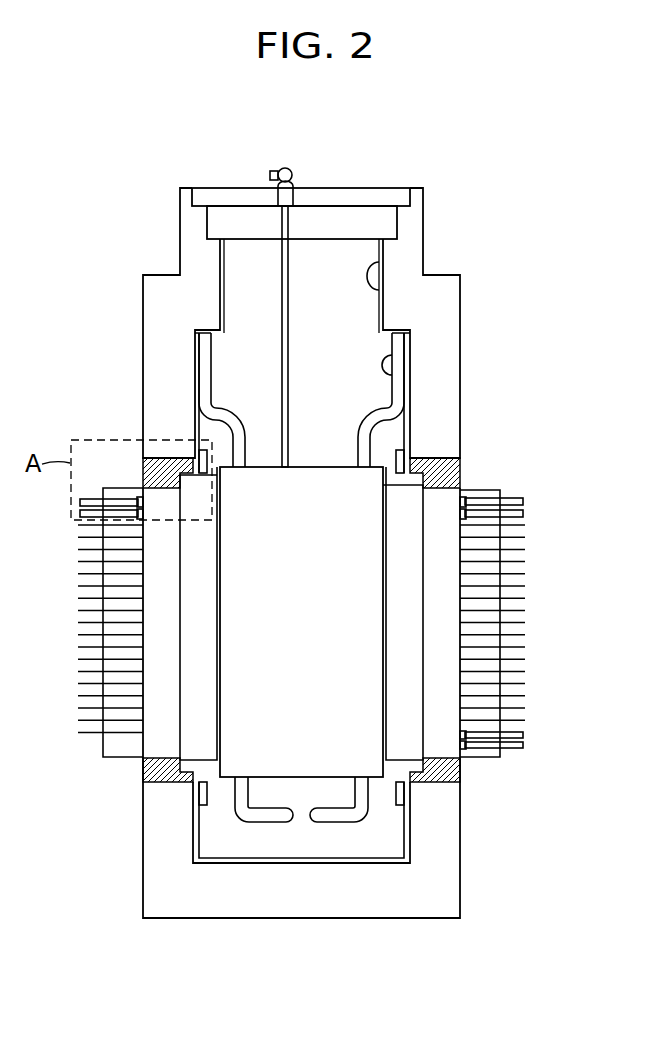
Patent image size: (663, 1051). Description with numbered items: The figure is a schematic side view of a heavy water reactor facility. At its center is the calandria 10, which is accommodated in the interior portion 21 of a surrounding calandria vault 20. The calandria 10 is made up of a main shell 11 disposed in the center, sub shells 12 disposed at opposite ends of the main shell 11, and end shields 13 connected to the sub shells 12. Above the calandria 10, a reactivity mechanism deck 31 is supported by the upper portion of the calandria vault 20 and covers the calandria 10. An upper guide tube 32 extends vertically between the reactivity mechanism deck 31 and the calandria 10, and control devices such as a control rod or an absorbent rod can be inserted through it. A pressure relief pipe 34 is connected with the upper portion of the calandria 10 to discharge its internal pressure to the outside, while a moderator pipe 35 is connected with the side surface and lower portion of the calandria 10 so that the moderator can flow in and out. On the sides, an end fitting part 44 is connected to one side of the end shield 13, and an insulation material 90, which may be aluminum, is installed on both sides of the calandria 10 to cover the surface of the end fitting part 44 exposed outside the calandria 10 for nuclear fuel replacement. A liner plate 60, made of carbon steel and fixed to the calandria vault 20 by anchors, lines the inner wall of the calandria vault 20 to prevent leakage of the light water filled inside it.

The calandria 10 is at (276, 746).
The main shell 11 is at (275, 777).
The sub shell 12 is at (198, 760).
The end shield 13 is at (152, 738).
The calandria vault 20 is at (462, 293).
The interior portion 21 is at (336, 398).
The reactivity mechanism deck 31 is at (367, 194).
The upper guide tube 32 is at (286, 279).
The pressure relief pipe 34 is at (392, 374).
The moderator pipe 35 is at (355, 808).
The end fitting part 44 is at (518, 750).
The liner plate 60 is at (379, 288).
The insulation material 90 is at (496, 494).